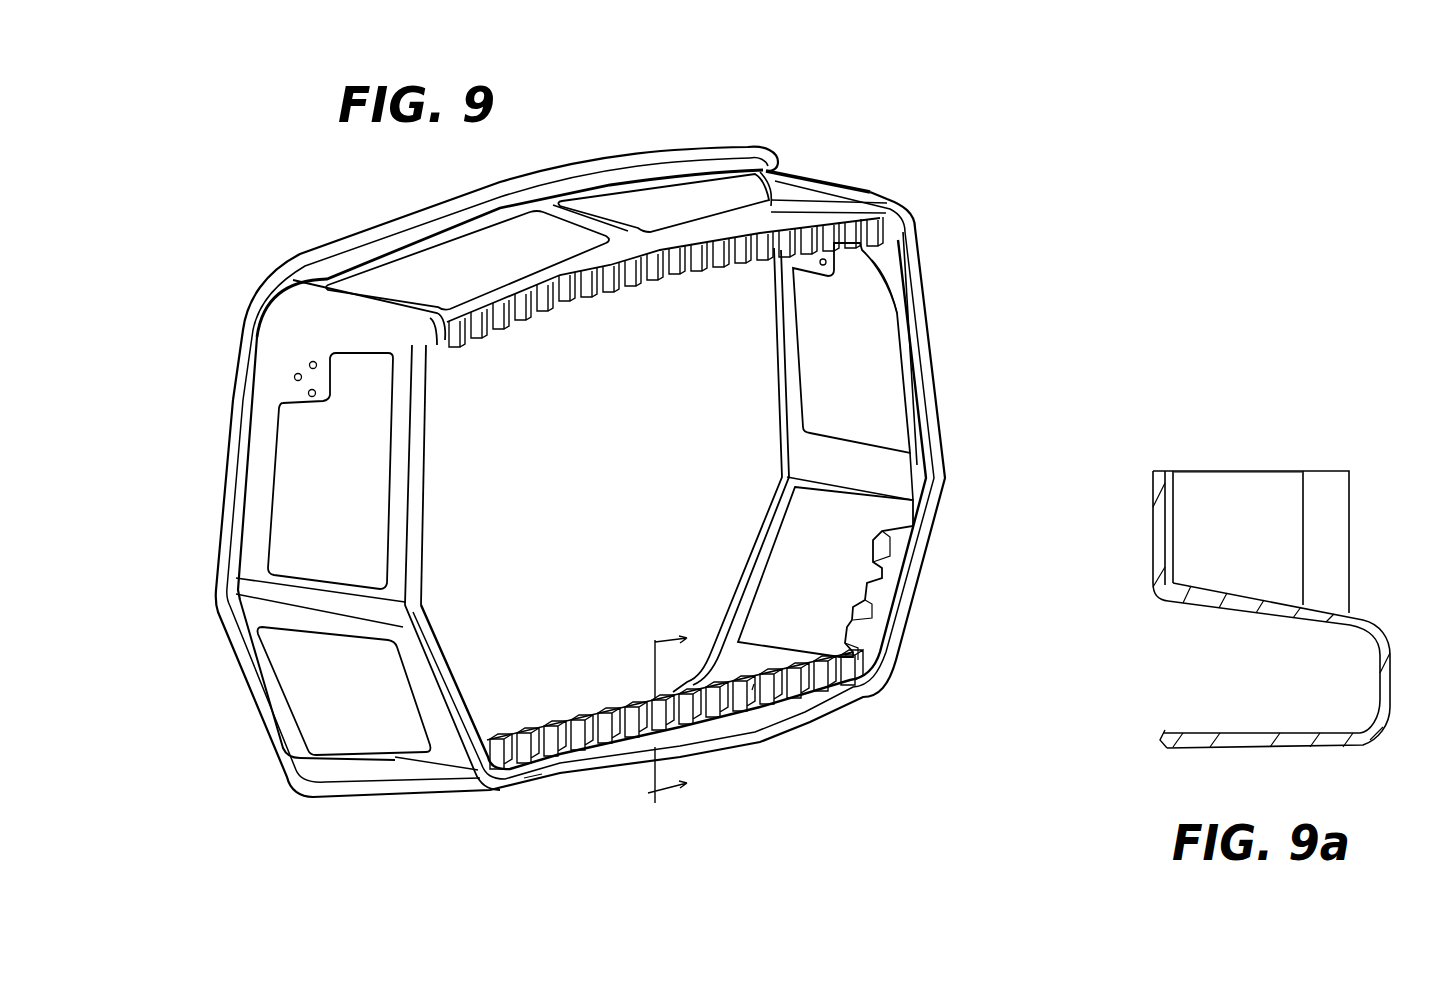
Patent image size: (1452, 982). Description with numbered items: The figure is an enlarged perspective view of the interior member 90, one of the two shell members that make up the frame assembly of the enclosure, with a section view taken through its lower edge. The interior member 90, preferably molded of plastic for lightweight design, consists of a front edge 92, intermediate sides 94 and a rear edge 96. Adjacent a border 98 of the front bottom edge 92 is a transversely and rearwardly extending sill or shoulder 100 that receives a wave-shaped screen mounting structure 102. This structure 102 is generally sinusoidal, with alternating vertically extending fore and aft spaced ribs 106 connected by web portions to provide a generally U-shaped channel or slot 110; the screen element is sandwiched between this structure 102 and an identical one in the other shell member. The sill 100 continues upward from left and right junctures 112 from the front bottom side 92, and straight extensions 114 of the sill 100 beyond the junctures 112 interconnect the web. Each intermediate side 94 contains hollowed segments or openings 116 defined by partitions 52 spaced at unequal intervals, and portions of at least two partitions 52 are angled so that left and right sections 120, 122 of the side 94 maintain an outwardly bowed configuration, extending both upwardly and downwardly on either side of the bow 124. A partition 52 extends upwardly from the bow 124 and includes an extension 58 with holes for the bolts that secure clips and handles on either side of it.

In FIG. 9, the interior member 90 is at (286, 178).
In FIG. 9, the front edge 92 is at (824, 771).
In FIG. 9A, the front edge 92 is at (1408, 688).
In FIG. 9, the partition 52 is at (290, 307).
In FIG. 9, the extension 58 is at (273, 372).
In FIG. 9, the intermediate side 94 is at (216, 408).
In FIG. 9, the rear edge 96 is at (760, 162).
In FIG. 9, the border 98 is at (708, 720).
In FIG. 9A, the border 98 is at (1386, 630).
In FIG. 9, the sill 100 is at (866, 670).
In FIG. 9, the wave-shaped screen mounting structure 102 is at (532, 780).
In FIG. 9, the rib 106 is at (537, 730).
In FIG. 9A, the rib 106 is at (1165, 470).
In FIG. 9, the slot 110 is at (752, 690).
In FIG. 9A, the slot 110 is at (1255, 545).
In FIG. 9, the juncture 112 is at (400, 660).
In FIG. 9, the straight extension 114 is at (907, 335).
In FIG. 9, the opening 116 is at (503, 262).
In FIG. 9, the left section 120 is at (208, 548).
In FIG. 9, the right section 122 is at (255, 748).
In FIG. 9, the bow 124 is at (214, 600).